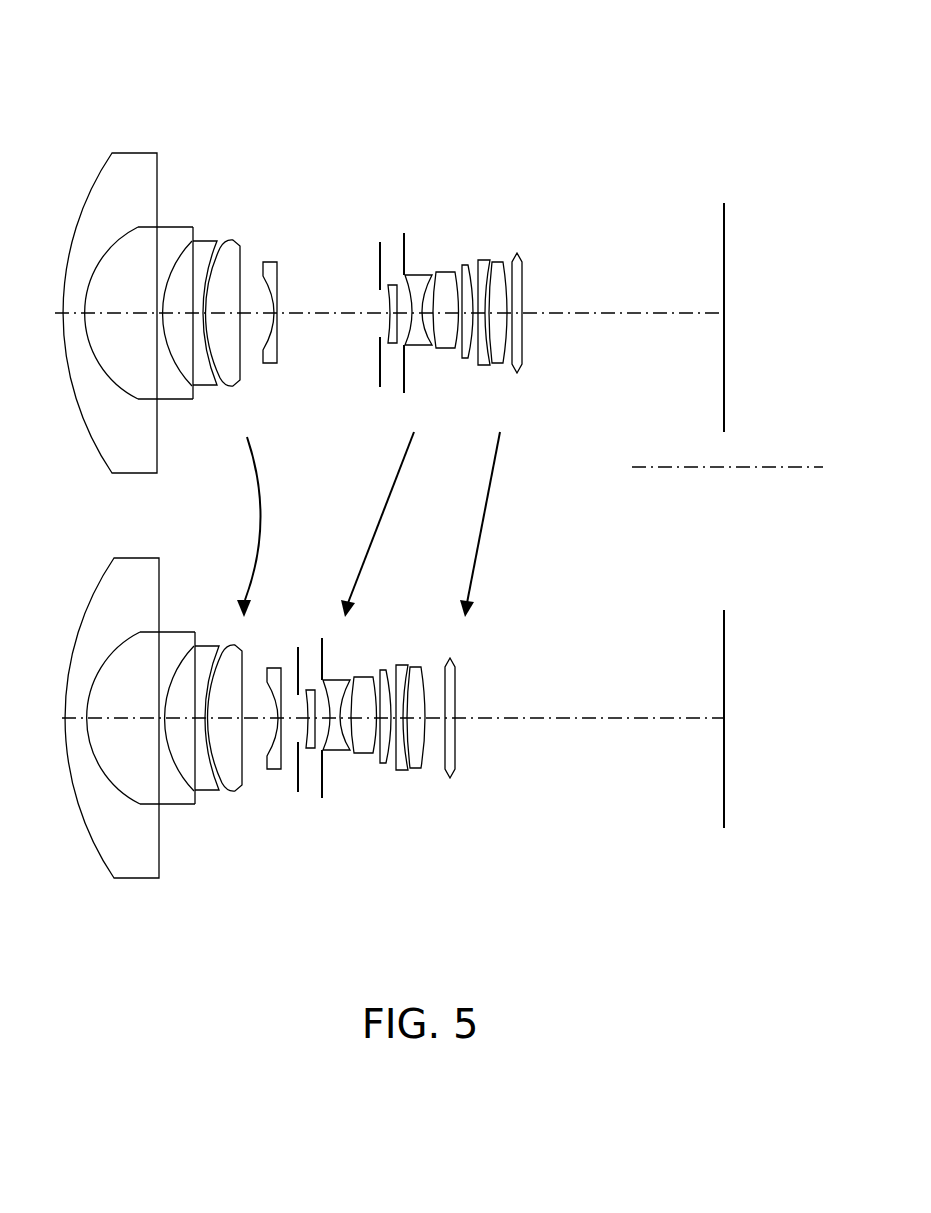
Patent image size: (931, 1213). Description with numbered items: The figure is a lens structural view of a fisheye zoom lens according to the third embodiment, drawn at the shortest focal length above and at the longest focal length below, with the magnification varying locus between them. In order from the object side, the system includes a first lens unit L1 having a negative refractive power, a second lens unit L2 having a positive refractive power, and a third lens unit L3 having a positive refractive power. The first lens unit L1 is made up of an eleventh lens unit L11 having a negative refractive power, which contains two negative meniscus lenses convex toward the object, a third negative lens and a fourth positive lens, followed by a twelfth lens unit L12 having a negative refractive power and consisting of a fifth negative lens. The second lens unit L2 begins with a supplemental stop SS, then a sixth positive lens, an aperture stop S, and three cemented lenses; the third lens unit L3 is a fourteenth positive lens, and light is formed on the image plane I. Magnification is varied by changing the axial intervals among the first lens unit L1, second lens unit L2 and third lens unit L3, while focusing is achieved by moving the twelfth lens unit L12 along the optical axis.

The first lens unit L1 is at (307, 72).
The eleventh lens unit L11 is at (88, 137).
The twelfth lens unit L12 is at (250, 137).
The second lens unit L2 is at (355, 86).
The third lens unit L3 is at (508, 86).
The supplemental stop SS is at (398, 223).
The aperture stop S is at (432, 216).
The image plane I is at (708, 176).